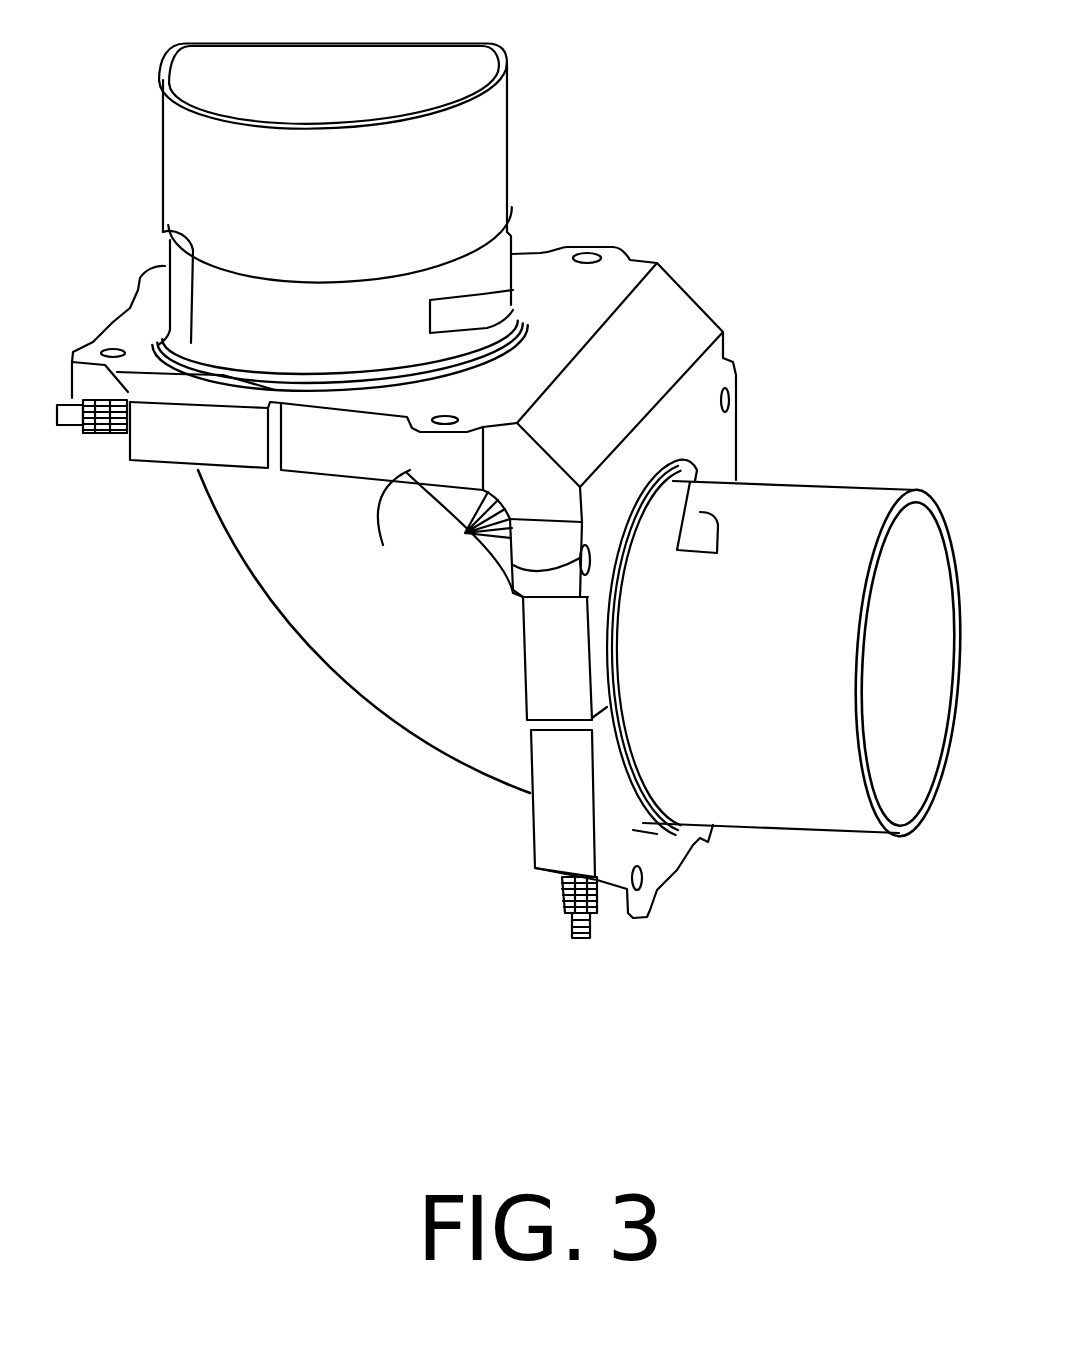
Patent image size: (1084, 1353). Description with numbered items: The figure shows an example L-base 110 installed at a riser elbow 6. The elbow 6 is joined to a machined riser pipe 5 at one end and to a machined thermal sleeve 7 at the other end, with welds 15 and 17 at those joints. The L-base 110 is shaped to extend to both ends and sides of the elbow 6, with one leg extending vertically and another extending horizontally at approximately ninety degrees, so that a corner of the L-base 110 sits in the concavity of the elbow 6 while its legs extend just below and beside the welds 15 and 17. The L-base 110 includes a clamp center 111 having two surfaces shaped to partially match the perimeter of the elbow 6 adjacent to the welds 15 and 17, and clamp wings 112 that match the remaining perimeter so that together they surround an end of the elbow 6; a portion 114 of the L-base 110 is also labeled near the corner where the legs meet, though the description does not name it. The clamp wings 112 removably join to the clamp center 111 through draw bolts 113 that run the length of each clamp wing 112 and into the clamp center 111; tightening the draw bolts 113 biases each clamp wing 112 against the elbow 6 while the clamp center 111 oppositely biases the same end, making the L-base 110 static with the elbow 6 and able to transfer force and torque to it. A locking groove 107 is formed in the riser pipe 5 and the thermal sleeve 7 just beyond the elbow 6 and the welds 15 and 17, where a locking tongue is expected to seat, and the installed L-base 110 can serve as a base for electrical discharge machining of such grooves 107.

The riser pipe 5 is at (463, 137).
The weld 15 is at (165, 228).
The locking groove 107 is at (487, 302).
The L-base 110 is at (494, 444).
The clamp center 111 is at (660, 333).
The neck portion 114 is at (513, 565).
The elbow 6 is at (377, 657).
The thermal sleeve 7 is at (867, 508).
The weld 17 is at (623, 763).
The clamp wing 112 is at (168, 422).
The draw bolt 113 is at (60, 435).